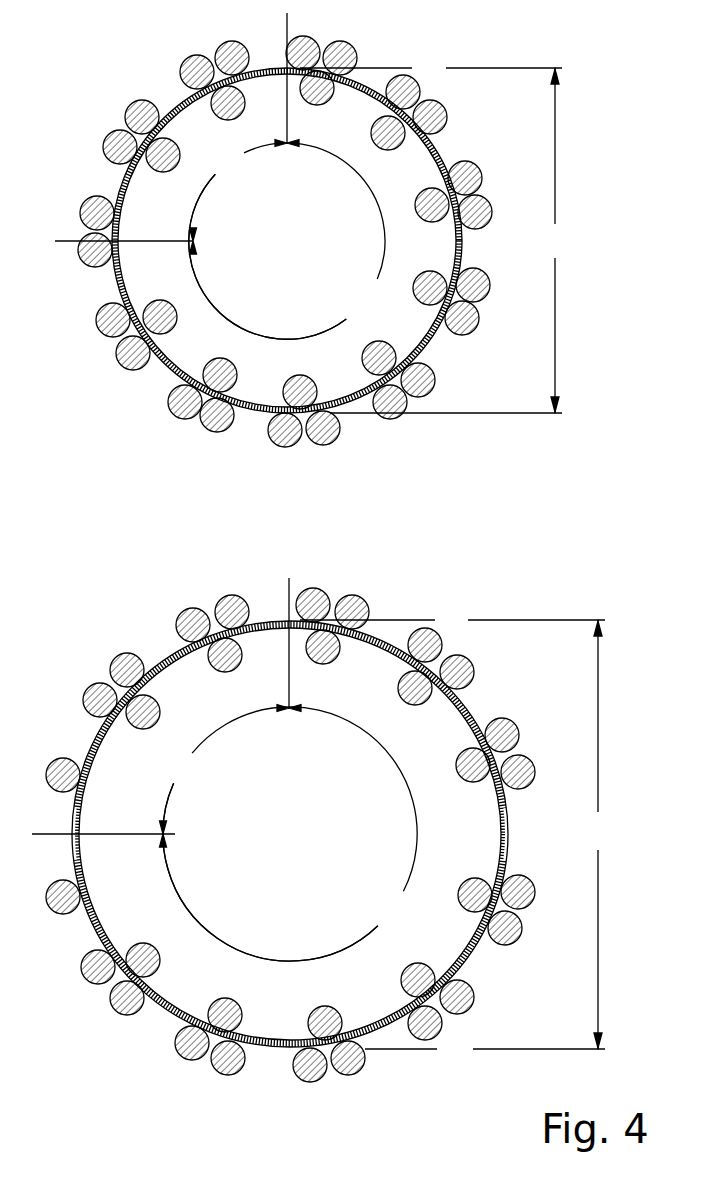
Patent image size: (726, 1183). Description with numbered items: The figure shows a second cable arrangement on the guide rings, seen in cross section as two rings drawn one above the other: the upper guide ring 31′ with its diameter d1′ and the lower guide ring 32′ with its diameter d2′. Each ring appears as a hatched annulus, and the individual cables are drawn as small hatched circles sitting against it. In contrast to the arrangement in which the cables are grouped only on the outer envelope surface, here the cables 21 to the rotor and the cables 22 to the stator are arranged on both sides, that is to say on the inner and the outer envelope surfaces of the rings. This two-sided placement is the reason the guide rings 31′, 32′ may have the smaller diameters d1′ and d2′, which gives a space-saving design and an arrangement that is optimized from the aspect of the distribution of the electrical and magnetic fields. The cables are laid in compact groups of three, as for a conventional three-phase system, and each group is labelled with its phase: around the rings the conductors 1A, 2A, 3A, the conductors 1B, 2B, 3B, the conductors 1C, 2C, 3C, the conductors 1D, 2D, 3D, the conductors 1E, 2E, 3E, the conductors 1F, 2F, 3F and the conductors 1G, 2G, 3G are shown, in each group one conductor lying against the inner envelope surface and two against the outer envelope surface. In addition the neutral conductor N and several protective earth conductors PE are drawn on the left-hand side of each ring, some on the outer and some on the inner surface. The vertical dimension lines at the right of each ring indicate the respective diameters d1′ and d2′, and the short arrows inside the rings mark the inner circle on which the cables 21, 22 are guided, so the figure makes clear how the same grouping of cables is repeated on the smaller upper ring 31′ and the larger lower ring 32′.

The cables to the rotor 21 is at (224, 487).
The cables to the stator 22 is at (287, 567).
The upper guide ring 31′ is at (172, 107).
The lower guide ring 32′ is at (163, 658).
The diameter of the upper guide ring d1′ is at (437, 240).
The diameter of the lower guide ring d2′ is at (462, 834).
The phase A conductor 1 1A is at (188, 585).
The phase A conductor 2 2A is at (150, 613).
The phase A conductor 3 3A is at (149, 586).
The phase B conductor 1 1B is at (275, 563).
The phase B conductor 2 2B is at (269, 563).
The phase B conductor 3 3B is at (273, 567).
The phase C conductor 1 1C is at (392, 659).
The phase C conductor 2 2C is at (449, 697).
The phase C conductor 3 3C is at (419, 722).
The phase D conductor 1 1D is at (439, 591).
The phase D conductor 2 2D is at (494, 628).
The phase D conductor 3 3D is at (508, 588).
The phase E conductor 1 1E is at (439, 490).
The phase E conductor 2 2E is at (495, 455).
The phase E conductor 3 3E is at (509, 492).
The phase F conductor 1 1F is at (394, 421).
The phase F conductor 2 2F is at (455, 388).
The phase F conductor 3 3F is at (423, 360).
The phase G conductor 1 1G is at (318, 381).
The phase G conductor 2 2G is at (308, 318).
The phase G conductor 3 3G is at (348, 325).
The neutral conductor N is at (71, 494).
The protective earth conductor PE is at (110, 633).